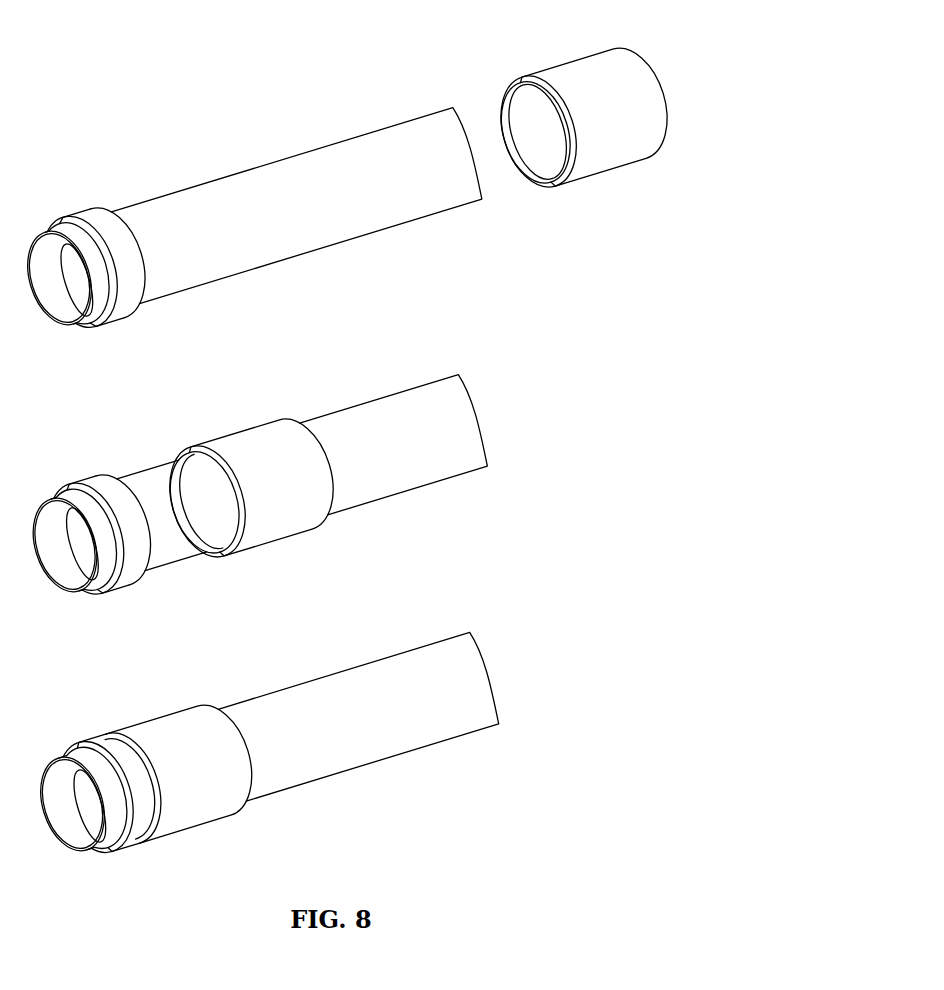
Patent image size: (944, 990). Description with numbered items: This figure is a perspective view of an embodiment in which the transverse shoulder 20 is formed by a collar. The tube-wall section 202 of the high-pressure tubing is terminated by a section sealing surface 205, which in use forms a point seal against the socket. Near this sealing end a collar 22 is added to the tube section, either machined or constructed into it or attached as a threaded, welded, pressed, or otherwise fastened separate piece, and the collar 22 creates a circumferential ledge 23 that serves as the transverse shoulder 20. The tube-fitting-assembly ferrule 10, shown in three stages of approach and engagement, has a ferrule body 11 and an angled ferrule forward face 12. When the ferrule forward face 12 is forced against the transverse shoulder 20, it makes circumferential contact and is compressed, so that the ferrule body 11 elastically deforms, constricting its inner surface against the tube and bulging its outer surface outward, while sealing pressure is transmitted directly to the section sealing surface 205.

The tube-fitting-assembly ferrule 10 is at (391, 435).
The ferrule body 11 is at (591, 60).
The ferrule forward face 12 is at (511, 89).
The transverse shoulder 20 is at (99, 531).
The collar 22 is at (116, 317).
The circumferential ledge 23 is at (140, 302).
The tube-wall section 202 is at (412, 205).
The section sealing surface 205 is at (60, 303).